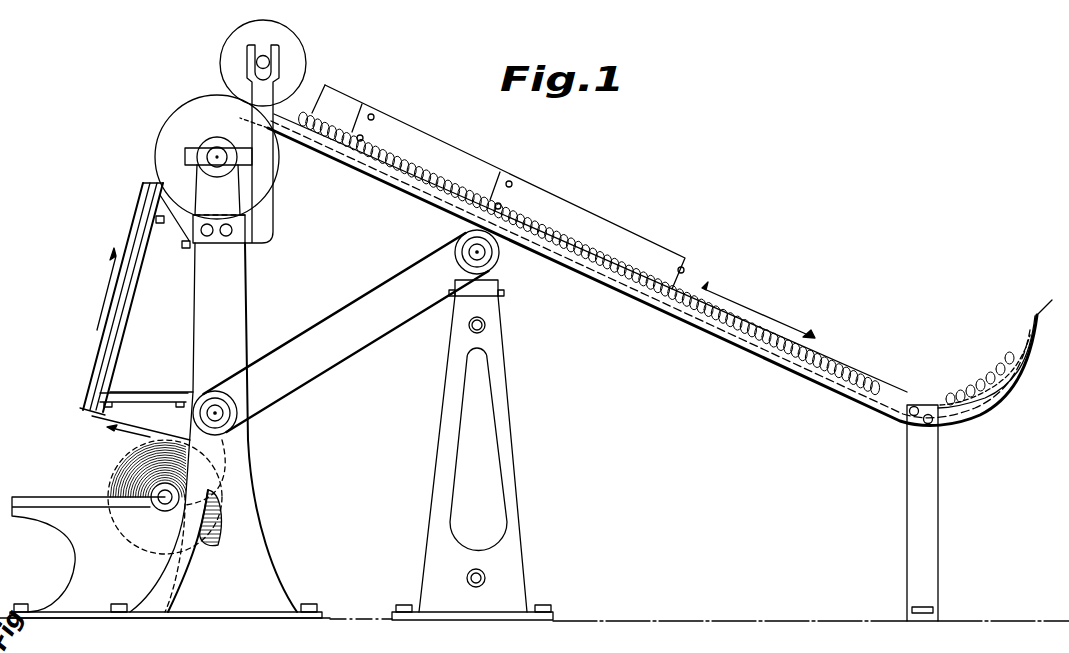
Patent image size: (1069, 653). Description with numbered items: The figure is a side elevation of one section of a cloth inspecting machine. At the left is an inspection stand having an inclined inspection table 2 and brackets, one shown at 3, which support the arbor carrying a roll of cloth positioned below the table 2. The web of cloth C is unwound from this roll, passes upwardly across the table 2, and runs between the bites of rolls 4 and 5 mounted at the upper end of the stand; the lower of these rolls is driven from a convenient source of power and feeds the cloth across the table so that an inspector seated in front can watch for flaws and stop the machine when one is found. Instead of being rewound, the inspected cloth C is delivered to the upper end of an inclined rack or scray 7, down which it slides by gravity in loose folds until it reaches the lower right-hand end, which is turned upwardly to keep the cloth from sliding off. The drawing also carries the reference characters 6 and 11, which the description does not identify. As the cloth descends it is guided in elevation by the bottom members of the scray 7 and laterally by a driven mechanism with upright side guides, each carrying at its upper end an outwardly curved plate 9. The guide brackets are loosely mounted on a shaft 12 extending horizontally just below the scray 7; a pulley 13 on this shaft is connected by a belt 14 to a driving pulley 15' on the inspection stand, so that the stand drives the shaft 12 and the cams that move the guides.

The inclined inspection table 2 is at (118, 306).
The bracket 3 is at (142, 572).
The roll 4 is at (203, 120).
The roll 5 is at (244, 50).
The cover plate 6 is at (582, 222).
The inclined rack or scray 7 is at (378, 182).
The outwardly curved plate 9 is at (336, 110).
The guide piece 11 is at (216, 510).
The shaft 12 is at (468, 250).
The pulley 13 is at (497, 264).
The belt 14 is at (350, 358).
The driving pulley 15' is at (243, 417).
The web of cloth C is at (97, 420).